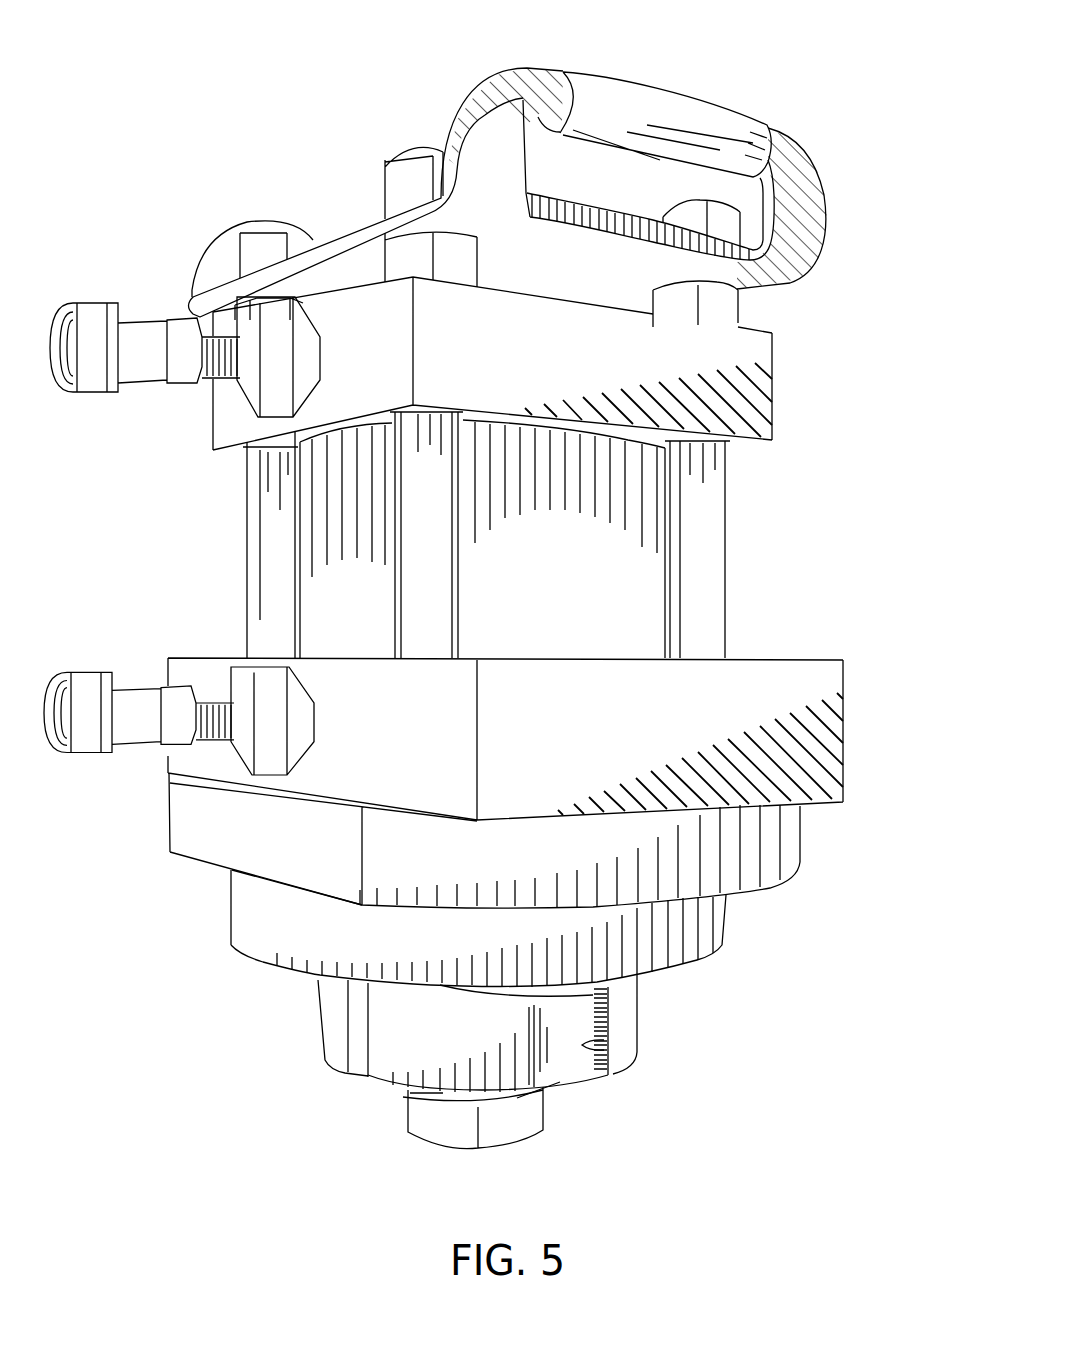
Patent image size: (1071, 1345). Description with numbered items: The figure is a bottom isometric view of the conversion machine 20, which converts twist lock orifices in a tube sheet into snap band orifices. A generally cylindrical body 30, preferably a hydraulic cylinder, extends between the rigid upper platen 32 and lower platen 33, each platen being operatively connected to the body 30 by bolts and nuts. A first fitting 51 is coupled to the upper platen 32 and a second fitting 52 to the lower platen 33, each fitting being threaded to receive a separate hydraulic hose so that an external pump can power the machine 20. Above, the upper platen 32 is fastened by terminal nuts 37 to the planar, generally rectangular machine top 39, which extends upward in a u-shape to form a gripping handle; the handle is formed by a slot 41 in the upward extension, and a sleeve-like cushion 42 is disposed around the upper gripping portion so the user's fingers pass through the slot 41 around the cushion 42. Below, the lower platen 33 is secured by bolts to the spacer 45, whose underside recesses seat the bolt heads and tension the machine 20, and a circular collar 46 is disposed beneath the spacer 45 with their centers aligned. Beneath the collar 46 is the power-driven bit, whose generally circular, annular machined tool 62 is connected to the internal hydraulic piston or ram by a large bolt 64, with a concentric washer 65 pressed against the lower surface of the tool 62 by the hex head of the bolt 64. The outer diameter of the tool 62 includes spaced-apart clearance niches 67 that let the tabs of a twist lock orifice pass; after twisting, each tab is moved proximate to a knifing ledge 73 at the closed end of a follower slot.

The conversion machine 20 is at (805, 68).
The cylindrical body 30 is at (613, 567).
The upper platen 32 is at (749, 371).
The lower platen 33 is at (827, 715).
The terminal nuts 37 is at (400, 176).
The machine top 39 is at (228, 290).
The slot 41 is at (540, 152).
The cushion 42 is at (660, 118).
The spacer 45 is at (785, 833).
The circular collar 46 is at (703, 933).
The first fitting 51 is at (100, 303).
The second fitting 52 is at (83, 697).
The machined tool 62 is at (333, 1048).
The bolt 64 is at (530, 1115).
The washer 65 is at (443, 1095).
The clearance niche 67 is at (567, 1007).
The knifing ledge 73 is at (583, 1047).